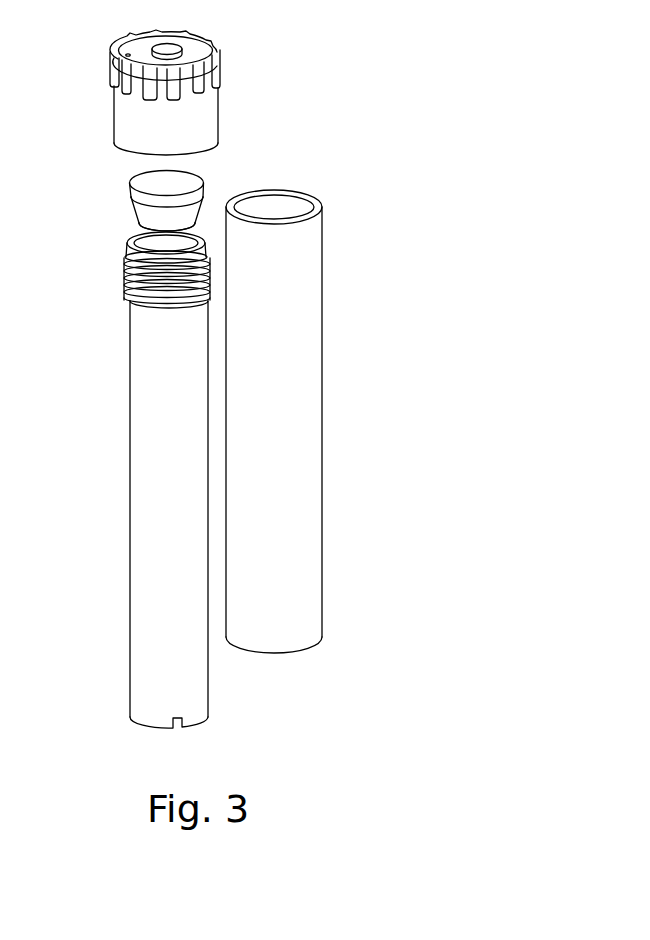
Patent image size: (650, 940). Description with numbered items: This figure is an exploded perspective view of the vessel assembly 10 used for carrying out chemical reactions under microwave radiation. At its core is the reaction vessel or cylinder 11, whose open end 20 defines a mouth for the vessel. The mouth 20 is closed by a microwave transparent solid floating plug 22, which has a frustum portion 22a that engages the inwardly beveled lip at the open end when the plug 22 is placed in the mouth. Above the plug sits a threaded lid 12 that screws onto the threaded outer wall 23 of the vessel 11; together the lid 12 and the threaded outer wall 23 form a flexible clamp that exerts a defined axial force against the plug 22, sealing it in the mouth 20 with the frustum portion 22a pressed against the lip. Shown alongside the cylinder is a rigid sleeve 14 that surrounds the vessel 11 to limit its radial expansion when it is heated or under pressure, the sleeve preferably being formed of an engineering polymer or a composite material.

The vessel assembly 10 is at (327, 112).
The cylinder 11 is at (178, 486).
The threaded lid 12 is at (165, 92).
The rigid sleeve 14 is at (274, 421).
The open end 20 is at (152, 238).
The floating plug 22 is at (155, 184).
The frustum portion 22a is at (190, 213).
The threaded outer wall 23 is at (118, 268).